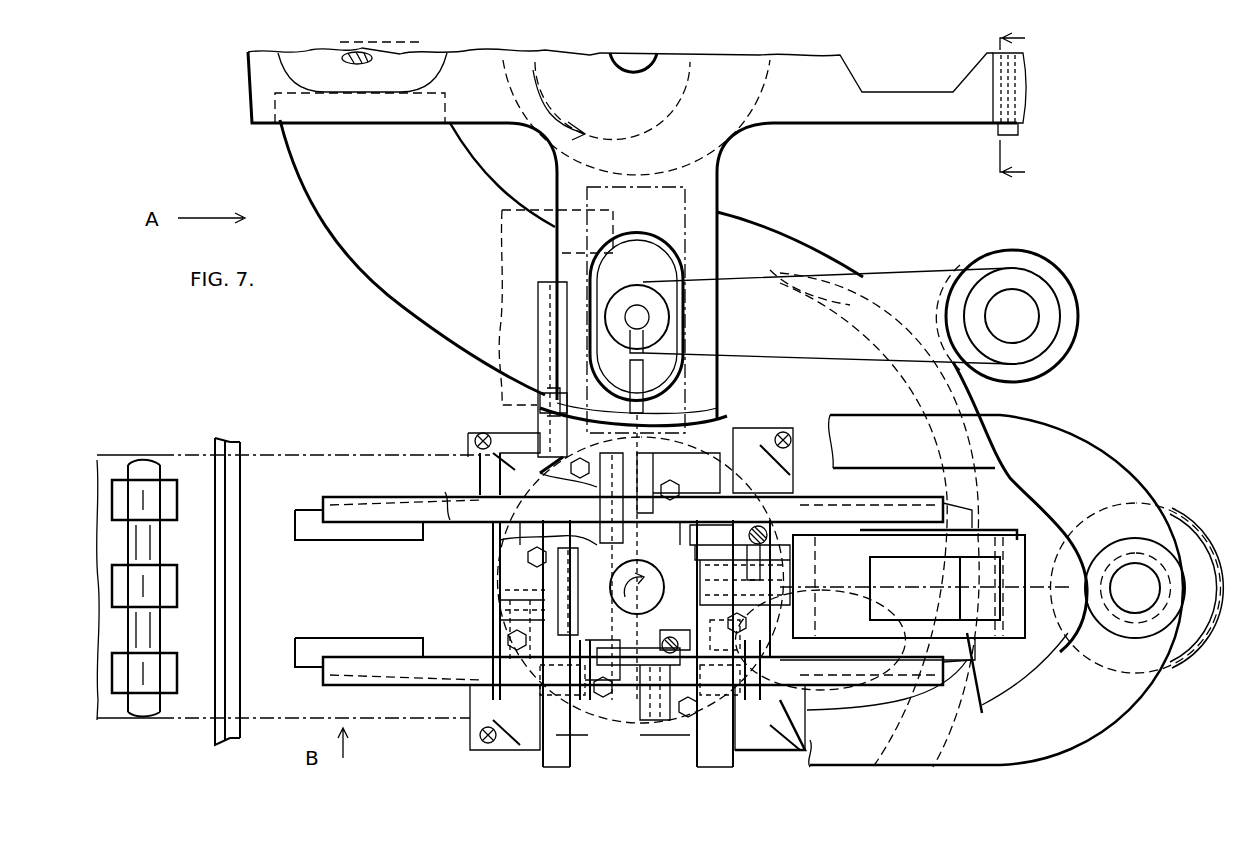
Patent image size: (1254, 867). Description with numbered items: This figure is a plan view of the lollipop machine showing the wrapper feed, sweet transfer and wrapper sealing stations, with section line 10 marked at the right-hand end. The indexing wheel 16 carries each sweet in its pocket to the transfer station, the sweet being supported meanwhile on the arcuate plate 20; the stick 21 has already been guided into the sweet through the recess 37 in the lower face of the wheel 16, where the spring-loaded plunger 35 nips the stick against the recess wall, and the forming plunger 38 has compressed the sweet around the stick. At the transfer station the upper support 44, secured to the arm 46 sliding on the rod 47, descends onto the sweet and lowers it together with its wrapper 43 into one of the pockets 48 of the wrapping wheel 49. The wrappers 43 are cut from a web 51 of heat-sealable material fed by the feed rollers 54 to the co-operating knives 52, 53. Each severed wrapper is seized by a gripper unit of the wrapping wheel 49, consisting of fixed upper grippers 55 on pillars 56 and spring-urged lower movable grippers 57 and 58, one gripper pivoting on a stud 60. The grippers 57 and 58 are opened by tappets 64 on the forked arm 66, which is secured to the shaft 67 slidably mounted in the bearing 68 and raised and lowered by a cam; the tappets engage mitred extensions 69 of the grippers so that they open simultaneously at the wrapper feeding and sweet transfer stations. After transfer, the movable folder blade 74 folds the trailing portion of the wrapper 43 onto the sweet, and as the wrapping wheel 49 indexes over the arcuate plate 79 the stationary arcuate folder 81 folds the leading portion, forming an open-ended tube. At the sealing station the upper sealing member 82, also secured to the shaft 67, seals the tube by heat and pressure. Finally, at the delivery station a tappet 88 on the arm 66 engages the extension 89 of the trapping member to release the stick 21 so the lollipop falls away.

The section line 10- 10 is at (1026, 107).
The wheel 16 is at (790, 115).
The arcuate plate 20 is at (318, 176).
The stick 21 is at (628, 438).
The plunger 35 is at (1026, 92).
The recess 37 is at (629, 397).
The plunger 38 is at (383, 80).
The wrapper 43 is at (688, 200).
The upper support 44 is at (645, 265).
The arm 46 is at (893, 290).
The rod 47 is at (1020, 317).
The pocket 48 is at (335, 645).
The wrapping wheel 49 is at (535, 425).
The web 51 is at (118, 462).
The knife 52 is at (225, 486).
The knife 53 is at (238, 486).
The feed rollers 54 is at (153, 577).
The upper grippers 55 is at (360, 510).
The pillars 56 is at (508, 638).
The lower movable gripper 57 is at (463, 510).
The lower movable gripper 58 is at (863, 512).
The stud 60 is at (615, 595).
The tappets 64 is at (480, 432).
The forked arm 66 is at (880, 430).
The shaft 67 is at (1140, 575).
The bearing 68 is at (1195, 555).
The mitred extensions 69 is at (785, 705).
The movable folder blade 74 is at (512, 230).
The arcuate plate 79 is at (770, 255).
The stationary arcuate folder 81 is at (820, 268).
The upper sealing member 82 is at (1010, 548).
The tappet 88 is at (668, 636).
The extension 89 is at (640, 655).